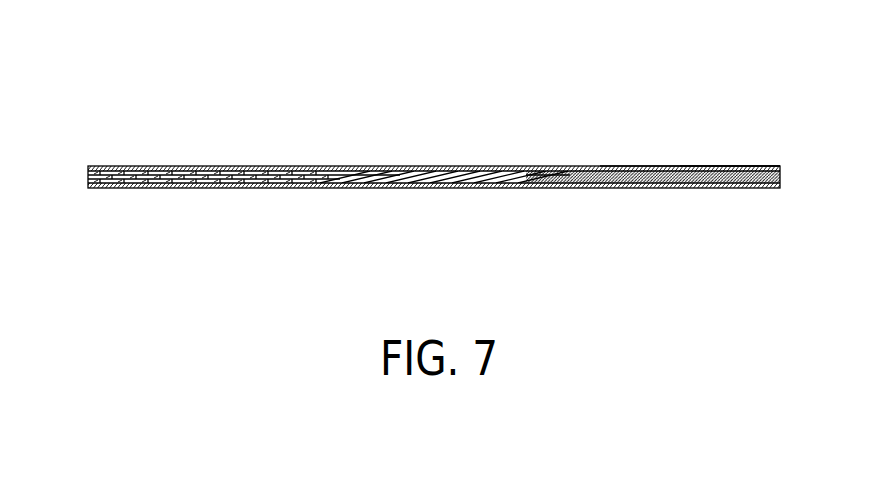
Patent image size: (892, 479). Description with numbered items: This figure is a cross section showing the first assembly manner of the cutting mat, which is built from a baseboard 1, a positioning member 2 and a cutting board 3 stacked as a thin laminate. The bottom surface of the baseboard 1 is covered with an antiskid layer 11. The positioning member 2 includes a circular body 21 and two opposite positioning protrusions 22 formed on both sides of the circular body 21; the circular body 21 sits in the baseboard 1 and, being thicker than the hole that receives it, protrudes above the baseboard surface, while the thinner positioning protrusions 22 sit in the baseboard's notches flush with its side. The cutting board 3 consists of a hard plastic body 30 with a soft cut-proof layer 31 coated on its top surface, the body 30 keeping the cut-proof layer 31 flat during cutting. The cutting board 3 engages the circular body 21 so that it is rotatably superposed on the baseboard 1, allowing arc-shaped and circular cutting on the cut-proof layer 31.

The baseboard 1 is at (150, 190).
The positioning member 2 is at (434, 196).
The cutting board 3 is at (148, 160).
The antiskid layer 11 is at (720, 188).
The circular body 21 is at (393, 173).
The positioning protrusions 22 is at (532, 184).
The body 30 is at (690, 167).
The cut-proof layer 31 is at (636, 166).